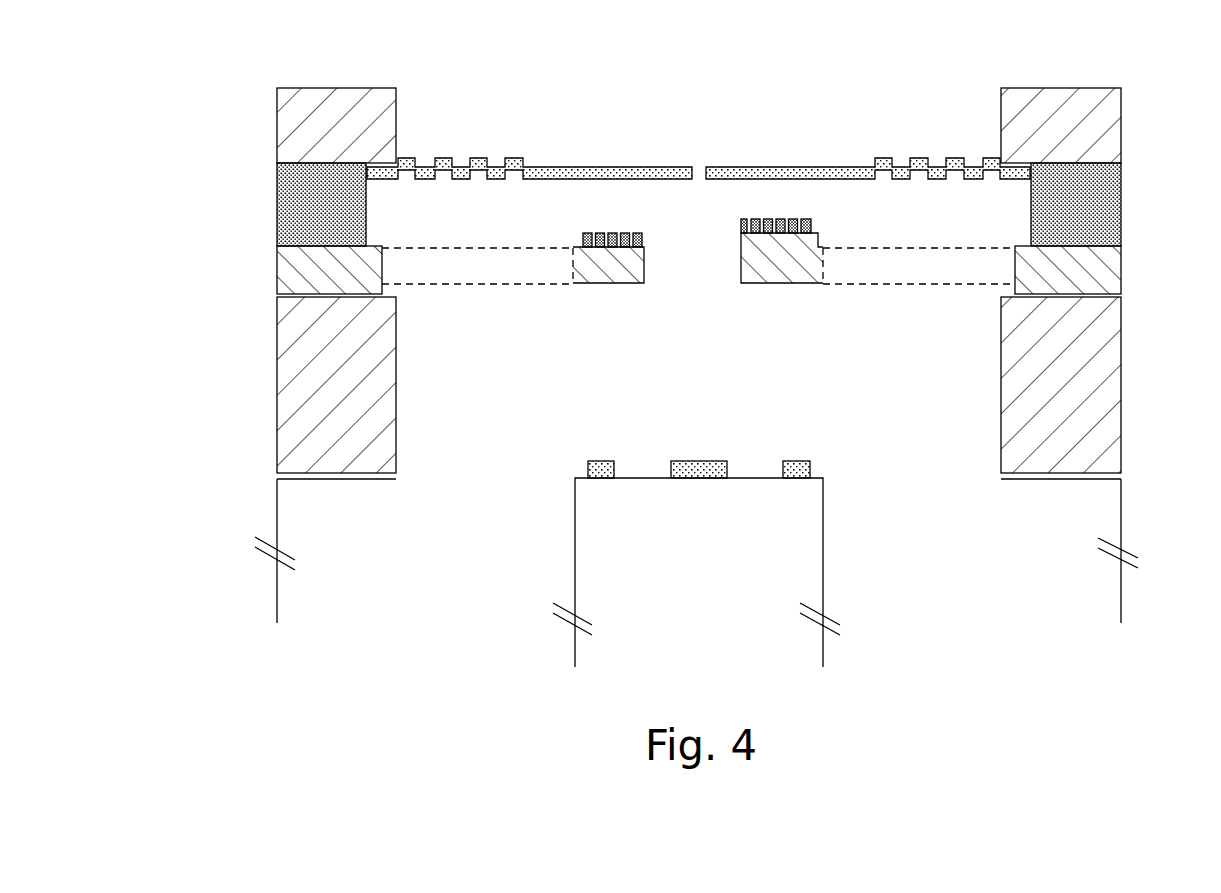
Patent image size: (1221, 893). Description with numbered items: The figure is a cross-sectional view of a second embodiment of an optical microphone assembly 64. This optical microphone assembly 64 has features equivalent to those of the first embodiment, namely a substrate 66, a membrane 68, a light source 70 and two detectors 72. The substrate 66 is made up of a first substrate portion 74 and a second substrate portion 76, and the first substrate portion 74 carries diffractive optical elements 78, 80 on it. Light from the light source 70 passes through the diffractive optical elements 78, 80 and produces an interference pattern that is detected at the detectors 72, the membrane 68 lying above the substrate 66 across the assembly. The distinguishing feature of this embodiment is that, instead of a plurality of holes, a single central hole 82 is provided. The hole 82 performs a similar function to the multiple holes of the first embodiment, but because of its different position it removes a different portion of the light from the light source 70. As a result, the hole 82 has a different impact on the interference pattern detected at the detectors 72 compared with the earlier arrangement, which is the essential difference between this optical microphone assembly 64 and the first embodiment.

The optical microphone assembly 64 is at (255, 80).
The substrate 66 is at (1137, 260).
The membrane 68 is at (587, 167).
The light source 70 is at (707, 480).
The detectors 72 is at (600, 480).
The first substrate portion 74 is at (787, 278).
The second substrate portion 76 is at (297, 277).
The diffractive optical element 78 is at (603, 228).
The diffractive optical element 80 is at (803, 215).
The central hole 82 is at (683, 277).